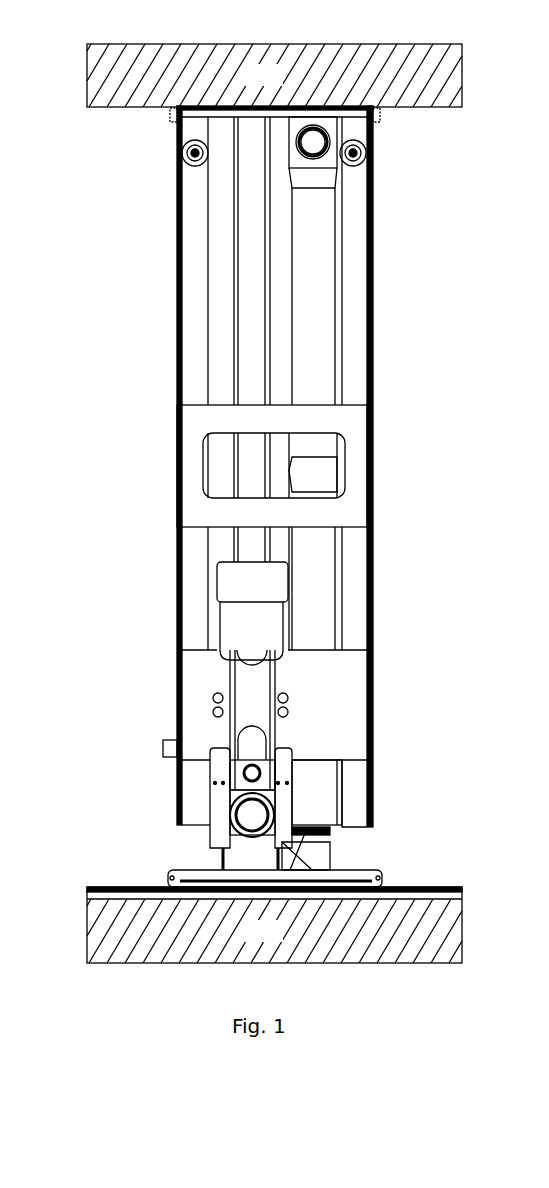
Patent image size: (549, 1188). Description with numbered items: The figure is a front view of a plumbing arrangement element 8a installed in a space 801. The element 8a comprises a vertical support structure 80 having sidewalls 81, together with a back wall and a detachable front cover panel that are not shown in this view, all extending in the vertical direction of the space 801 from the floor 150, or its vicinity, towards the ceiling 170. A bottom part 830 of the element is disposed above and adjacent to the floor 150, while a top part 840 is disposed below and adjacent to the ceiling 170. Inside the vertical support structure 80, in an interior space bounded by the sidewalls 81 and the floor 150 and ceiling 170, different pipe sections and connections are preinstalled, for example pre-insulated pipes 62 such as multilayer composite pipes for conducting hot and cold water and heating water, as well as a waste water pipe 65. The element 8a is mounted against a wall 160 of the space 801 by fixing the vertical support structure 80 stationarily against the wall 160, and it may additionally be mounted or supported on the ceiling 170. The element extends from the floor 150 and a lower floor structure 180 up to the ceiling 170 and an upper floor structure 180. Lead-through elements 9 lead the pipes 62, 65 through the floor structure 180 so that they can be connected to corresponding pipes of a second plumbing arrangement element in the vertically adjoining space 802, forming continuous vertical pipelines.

The vertically adjoining space 802 is at (151, 34).
The space 801 is at (140, 297).
The floor structure 180 is at (282, 85).
The ceiling 170 is at (136, 108).
The floor 150 is at (138, 884).
The lead-through element 9 is at (173, 110).
The top part 840 is at (377, 130).
The pre-insulated pipe 62 is at (190, 236).
The sidewall 81 is at (178, 359).
The wall 160 is at (149, 469).
The plumbing arrangement element 8a is at (425, 470).
The vertical support structure 80 is at (373, 540).
The bottom part 830 is at (382, 795).
The waste water pipe 65 is at (330, 858).